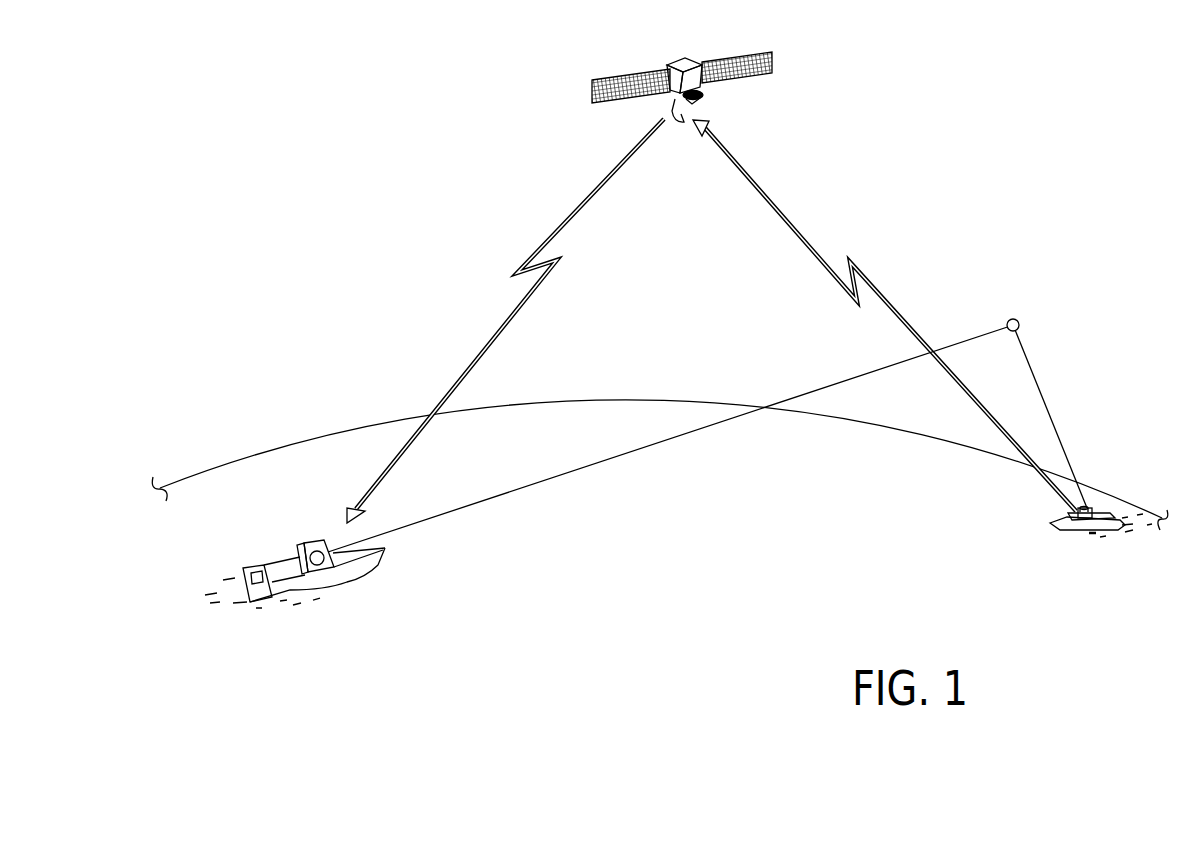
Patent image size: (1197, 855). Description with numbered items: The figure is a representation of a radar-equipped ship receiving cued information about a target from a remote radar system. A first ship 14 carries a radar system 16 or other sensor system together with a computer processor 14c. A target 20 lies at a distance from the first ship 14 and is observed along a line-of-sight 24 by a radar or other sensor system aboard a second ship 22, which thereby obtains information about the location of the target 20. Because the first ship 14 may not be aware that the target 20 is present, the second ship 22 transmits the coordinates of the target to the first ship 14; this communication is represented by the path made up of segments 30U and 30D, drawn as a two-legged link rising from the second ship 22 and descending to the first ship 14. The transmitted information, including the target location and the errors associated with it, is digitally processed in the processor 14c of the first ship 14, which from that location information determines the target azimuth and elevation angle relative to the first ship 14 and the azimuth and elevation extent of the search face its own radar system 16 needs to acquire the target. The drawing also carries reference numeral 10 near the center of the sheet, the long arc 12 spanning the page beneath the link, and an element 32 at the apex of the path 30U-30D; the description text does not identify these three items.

The maritime satellite communication system 10 is at (750, 506).
The earth surface / horizon 12 is at (603, 398).
The first ship 14 is at (268, 570).
The computer processor 14c is at (275, 592).
The radar system 16 is at (315, 540).
The target 20 is at (1015, 318).
The second ship 22 is at (1062, 518).
The line-of-sight 24 is at (1048, 415).
The communication path segment 30D is at (596, 199).
The communication path segment 30U is at (763, 187).
The satellite 32 is at (683, 58).